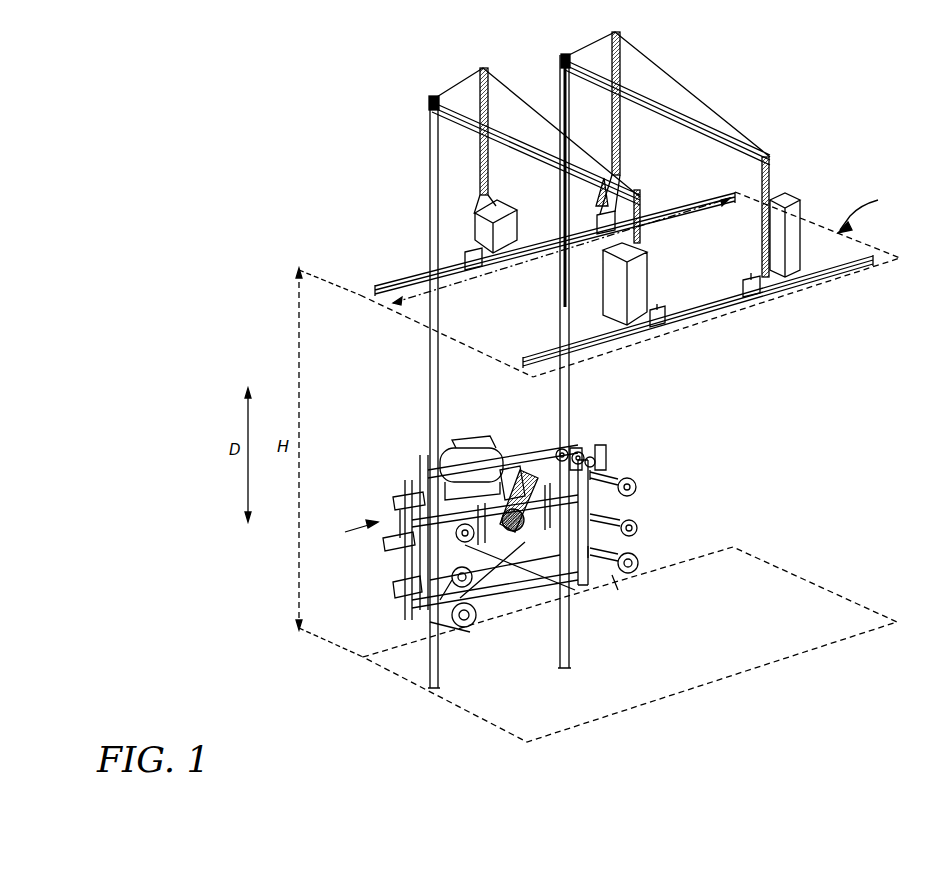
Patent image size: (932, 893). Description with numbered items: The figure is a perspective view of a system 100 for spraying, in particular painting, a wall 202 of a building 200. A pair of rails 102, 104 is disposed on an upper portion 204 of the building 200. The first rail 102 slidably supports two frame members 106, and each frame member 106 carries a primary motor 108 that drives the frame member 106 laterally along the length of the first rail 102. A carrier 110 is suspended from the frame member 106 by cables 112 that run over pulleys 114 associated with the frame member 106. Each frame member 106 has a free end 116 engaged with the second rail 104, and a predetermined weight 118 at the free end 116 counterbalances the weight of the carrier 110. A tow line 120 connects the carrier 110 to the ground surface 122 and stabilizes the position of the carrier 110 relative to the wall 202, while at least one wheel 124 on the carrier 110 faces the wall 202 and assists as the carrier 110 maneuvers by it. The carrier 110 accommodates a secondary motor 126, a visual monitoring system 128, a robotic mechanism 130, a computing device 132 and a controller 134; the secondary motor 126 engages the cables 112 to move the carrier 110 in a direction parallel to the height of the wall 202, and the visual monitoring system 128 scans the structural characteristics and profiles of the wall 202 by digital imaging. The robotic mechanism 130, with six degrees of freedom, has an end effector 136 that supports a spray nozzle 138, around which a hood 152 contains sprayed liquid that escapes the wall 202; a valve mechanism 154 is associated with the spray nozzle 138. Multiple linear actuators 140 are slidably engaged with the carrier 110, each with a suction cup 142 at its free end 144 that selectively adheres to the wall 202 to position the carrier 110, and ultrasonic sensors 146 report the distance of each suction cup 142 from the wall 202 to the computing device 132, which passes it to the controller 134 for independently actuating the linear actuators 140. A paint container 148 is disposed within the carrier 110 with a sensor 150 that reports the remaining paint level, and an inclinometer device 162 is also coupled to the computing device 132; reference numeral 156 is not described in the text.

The system 100 is at (498, 540).
The first rail 102 is at (380, 284).
The second rail 104 is at (612, 342).
The frame member 106 is at (490, 162).
The primary motor 108 is at (512, 204).
The carrier 110 is at (528, 602).
The cables 112 is at (430, 405).
The pulleys 114 is at (434, 95).
The free end 116 is at (668, 323).
The predetermined weight 118 is at (650, 283).
The tow line 120 is at (430, 675).
The ground surface 122 is at (708, 633).
The wheel 124 is at (640, 530).
The secondary motor 126 is at (507, 454).
The visual monitoring system 128 is at (507, 454).
The robotic mechanism 130 is at (507, 454).
The computing device 132 is at (507, 454).
The controller 134 is at (507, 454).
The end effector 136 is at (578, 448).
The spray nozzle 138 is at (600, 448).
The linear actuators 140 is at (612, 550).
The suction cup 142 is at (620, 582).
The free end 144 is at (432, 622).
The ultrasonic sensors 146 is at (455, 630).
The paint container 148 is at (507, 454).
The sensor 150 is at (507, 454).
The hood 152 is at (603, 451).
The valve mechanism 154 is at (620, 468).
The roller bracket 156 is at (615, 460).
The inclinometer device 162 is at (508, 446).
The building 200 is at (873, 212).
The wall 202 is at (403, 354).
The upper portion 204 is at (707, 261).